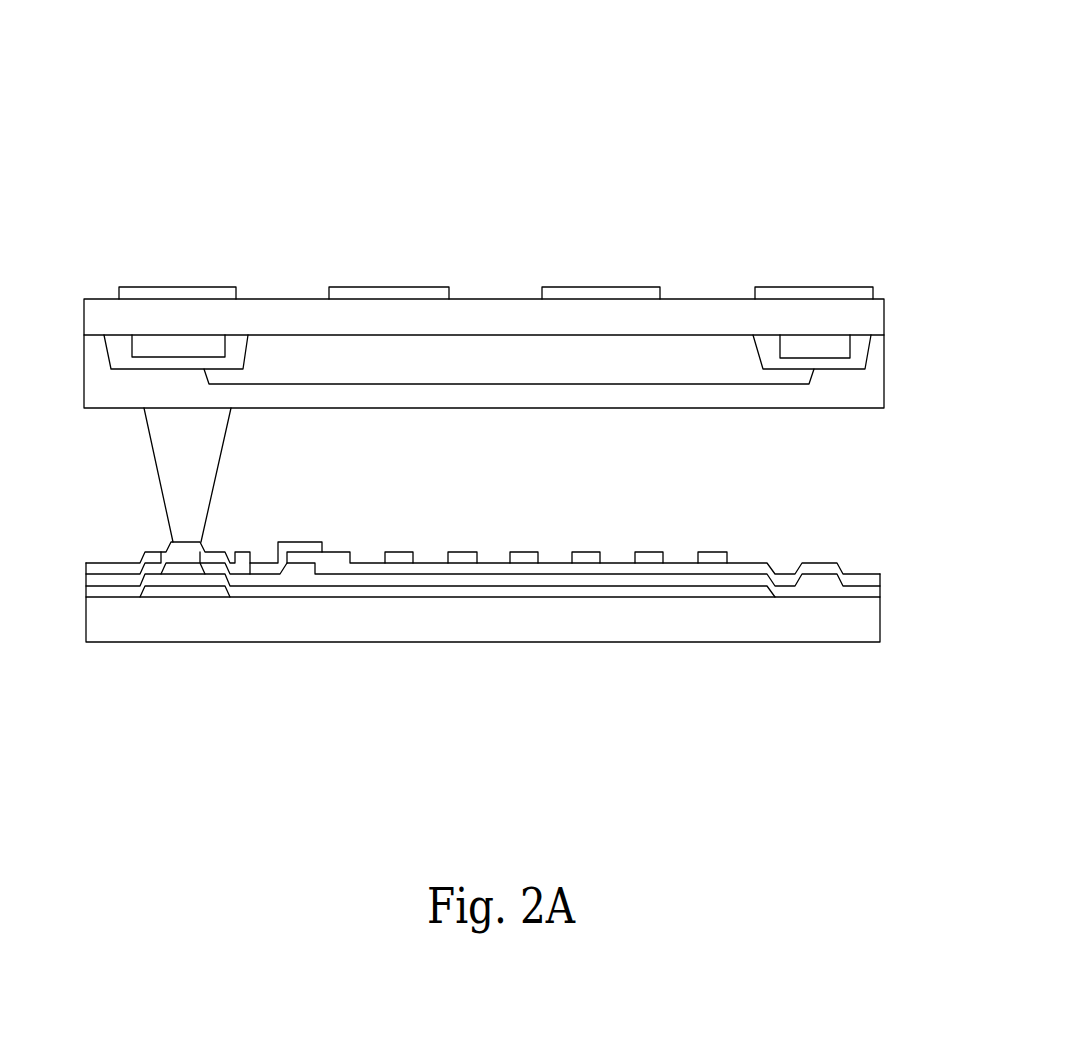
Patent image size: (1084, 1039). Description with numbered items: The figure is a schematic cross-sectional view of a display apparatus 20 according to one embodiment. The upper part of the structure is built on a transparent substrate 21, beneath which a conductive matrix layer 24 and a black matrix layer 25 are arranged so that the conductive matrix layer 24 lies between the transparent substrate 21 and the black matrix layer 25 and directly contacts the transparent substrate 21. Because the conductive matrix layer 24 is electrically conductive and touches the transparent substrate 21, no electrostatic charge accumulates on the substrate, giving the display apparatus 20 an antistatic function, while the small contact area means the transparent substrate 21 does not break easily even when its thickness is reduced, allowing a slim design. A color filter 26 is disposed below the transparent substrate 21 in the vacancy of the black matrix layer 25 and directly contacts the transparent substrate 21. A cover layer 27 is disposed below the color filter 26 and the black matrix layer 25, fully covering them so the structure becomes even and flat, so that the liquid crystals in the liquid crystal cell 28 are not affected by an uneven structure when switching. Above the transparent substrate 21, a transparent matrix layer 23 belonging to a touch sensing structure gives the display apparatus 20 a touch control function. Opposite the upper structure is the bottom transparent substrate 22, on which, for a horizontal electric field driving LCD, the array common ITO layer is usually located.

The display apparatus 20 is at (768, 43).
The transparent substrate 21 is at (601, 322).
The bottom transparent substrate 22 is at (338, 630).
The transparent matrix layer 23 is at (401, 290).
The conductive matrix layer 24 is at (200, 343).
The black matrix layer 25 is at (237, 347).
The color filter 26 is at (649, 368).
The cover layer 27 is at (497, 393).
The liquid crystal cell 28 is at (509, 475).